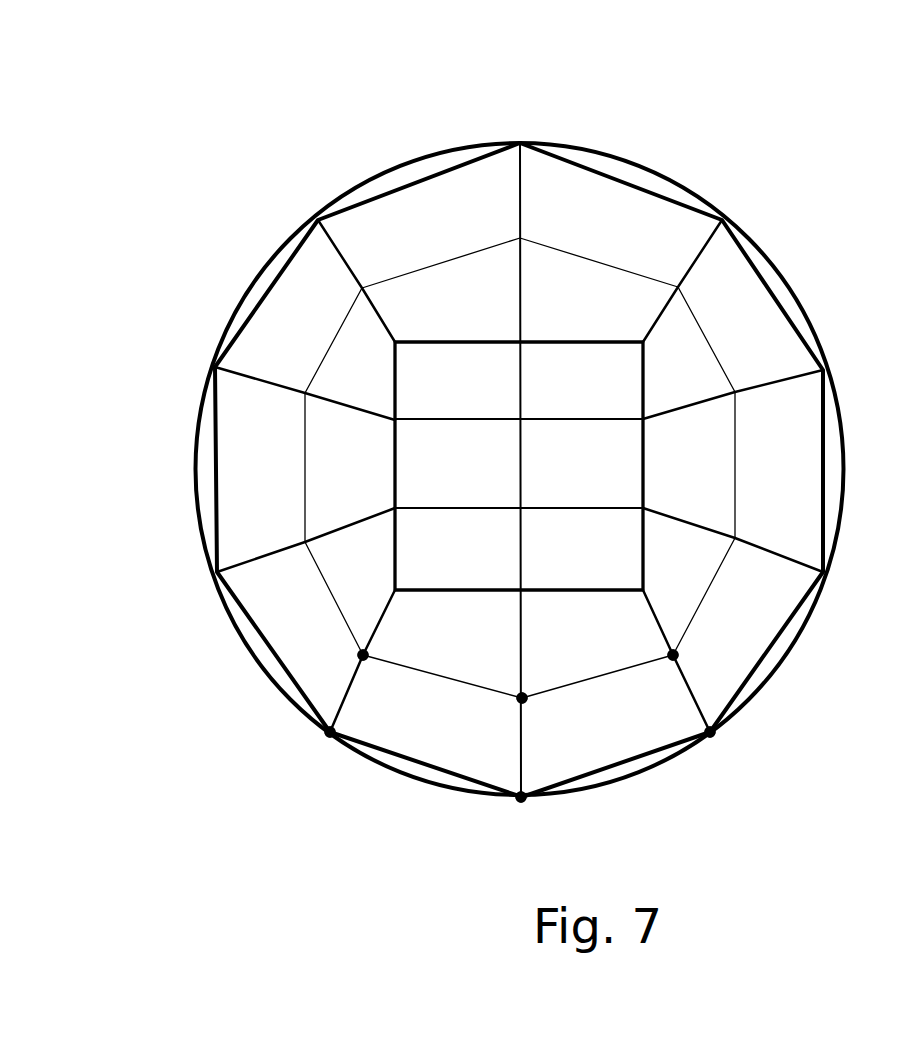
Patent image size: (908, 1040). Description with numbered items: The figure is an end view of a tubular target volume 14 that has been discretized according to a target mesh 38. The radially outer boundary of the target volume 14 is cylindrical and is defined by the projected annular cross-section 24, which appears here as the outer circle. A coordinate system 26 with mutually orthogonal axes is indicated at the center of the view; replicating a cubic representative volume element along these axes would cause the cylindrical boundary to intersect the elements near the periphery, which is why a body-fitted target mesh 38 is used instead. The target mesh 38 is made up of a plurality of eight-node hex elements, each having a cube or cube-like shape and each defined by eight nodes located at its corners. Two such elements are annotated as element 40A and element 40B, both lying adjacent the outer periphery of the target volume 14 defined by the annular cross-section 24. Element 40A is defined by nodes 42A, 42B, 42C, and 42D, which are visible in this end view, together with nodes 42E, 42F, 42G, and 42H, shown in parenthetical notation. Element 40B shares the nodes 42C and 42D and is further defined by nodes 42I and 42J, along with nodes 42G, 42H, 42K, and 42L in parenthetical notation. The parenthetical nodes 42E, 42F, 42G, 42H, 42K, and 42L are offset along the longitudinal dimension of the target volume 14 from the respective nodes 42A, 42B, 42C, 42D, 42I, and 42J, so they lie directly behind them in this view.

The target volume 14 is at (519, 416).
The annular cross-section 24 is at (782, 267).
The coordinate system 26 is at (645, 462).
The target mesh 38 is at (257, 478).
The element 40A is at (408, 728).
The element 40B is at (590, 728).
The node 42A is at (330, 732).
The node 42B is at (363, 655).
The node 42C is at (522, 698).
The node 42D is at (520, 800).
The node 42E is at (255, 766).
The node 42F is at (317, 632).
The node 42G is at (477, 668).
The node 42H is at (467, 850).
The node 42I is at (673, 655).
The node 42J is at (710, 732).
The node 42K is at (616, 645).
The node 42L is at (774, 781).